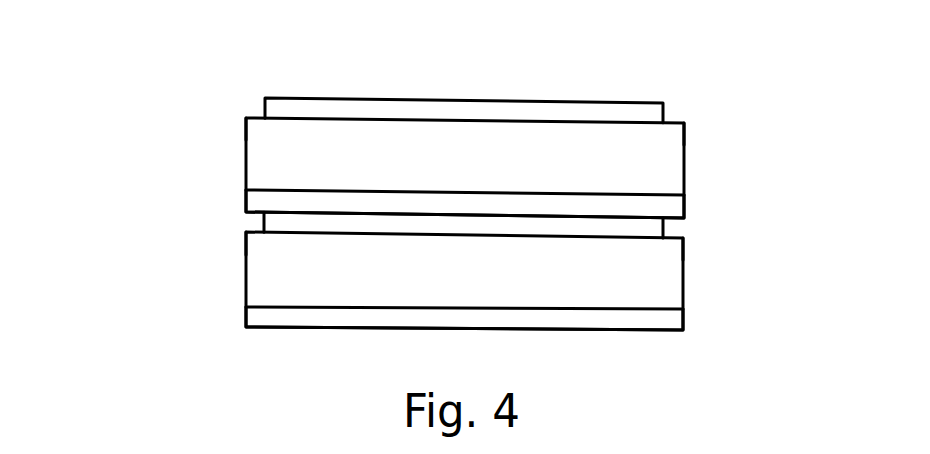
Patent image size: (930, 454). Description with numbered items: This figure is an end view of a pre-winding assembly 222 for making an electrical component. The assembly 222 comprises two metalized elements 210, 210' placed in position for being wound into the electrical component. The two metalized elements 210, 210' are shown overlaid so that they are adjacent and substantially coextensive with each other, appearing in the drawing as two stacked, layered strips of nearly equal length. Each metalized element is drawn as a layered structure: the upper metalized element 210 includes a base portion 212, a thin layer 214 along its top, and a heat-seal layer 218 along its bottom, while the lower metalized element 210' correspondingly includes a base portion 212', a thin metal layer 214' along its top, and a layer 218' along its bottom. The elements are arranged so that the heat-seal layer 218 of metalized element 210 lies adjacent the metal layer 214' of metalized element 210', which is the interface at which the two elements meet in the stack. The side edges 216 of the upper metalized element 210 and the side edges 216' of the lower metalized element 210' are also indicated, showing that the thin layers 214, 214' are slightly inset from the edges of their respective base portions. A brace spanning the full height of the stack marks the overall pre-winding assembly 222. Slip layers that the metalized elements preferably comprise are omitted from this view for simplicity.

The metalized element 210 is at (465, 116).
The metalized element 210' is at (465, 312).
The first substrate 212 is at (522, 168).
The second substrate 212' is at (520, 281).
The first thin film layer 214 is at (464, 82).
The metal layer 214' is at (529, 237).
The edge of first substrate 216 is at (468, 110).
The edge of second substrate 216' is at (464, 257).
The heat-seal layer 218 is at (519, 201).
The second backside layer 218' is at (447, 346).
The pre-winding assembly 222 is at (137, 42).